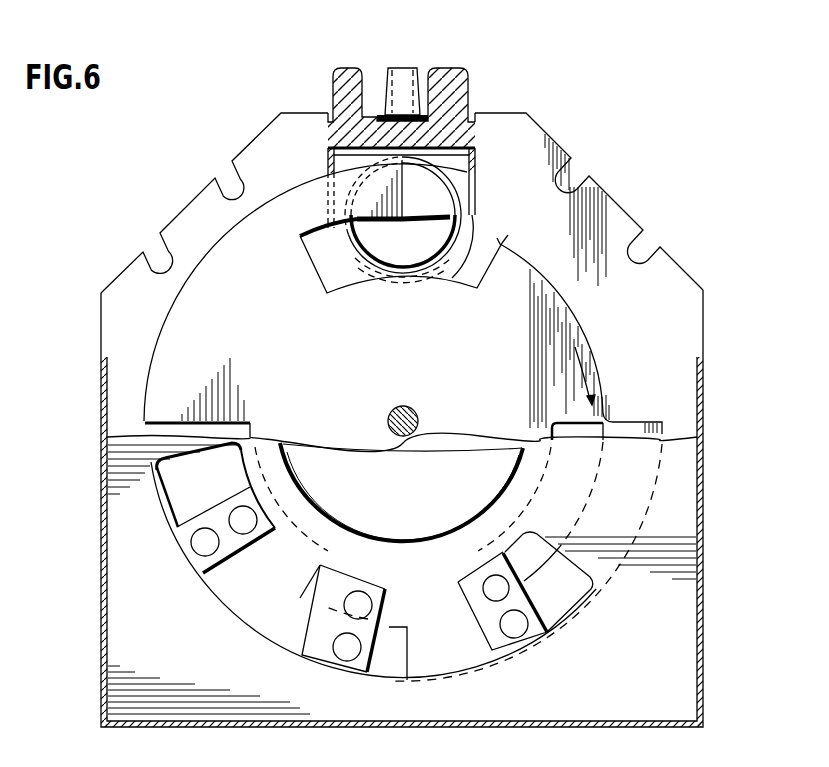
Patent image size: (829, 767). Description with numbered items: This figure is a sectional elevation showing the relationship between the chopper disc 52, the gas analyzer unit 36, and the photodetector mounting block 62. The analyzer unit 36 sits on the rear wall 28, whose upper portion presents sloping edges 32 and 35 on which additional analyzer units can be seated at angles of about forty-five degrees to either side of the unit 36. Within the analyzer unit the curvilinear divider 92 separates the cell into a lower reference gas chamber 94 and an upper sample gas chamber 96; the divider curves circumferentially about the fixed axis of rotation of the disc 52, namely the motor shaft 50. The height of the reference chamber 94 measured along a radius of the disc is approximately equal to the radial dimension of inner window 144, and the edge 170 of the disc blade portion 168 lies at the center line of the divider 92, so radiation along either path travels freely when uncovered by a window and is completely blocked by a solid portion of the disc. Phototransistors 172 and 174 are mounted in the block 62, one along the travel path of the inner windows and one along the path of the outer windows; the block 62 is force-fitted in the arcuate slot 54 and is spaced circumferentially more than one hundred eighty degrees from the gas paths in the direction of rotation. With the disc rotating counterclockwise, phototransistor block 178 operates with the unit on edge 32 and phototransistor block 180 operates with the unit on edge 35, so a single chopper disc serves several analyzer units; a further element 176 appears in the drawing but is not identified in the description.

The rear wall 28 is at (685, 291).
The sloping edge 32 is at (258, 136).
The sloping edge 35 is at (550, 130).
The optical gas analysis assembly 36 is at (473, 82).
The shaft 50 is at (405, 405).
The chopper disc 52 is at (589, 337).
The arcuate slot 54 is at (232, 606).
The photodetector support block 62 is at (320, 643).
The curvilinear divider 92 is at (440, 221).
The lower gas chamber 94 is at (432, 247).
The upper gas chamber 96 is at (430, 192).
The inner window 144 is at (327, 266).
The disc blade portion 168 is at (312, 190).
The edge 170 is at (316, 246).
The phototransistor 172 is at (338, 653).
The phototransistor 174 is at (360, 600).
The stop block 176 is at (586, 382).
The phototransistor block 178 is at (498, 652).
The phototransistor block 180 is at (178, 524).